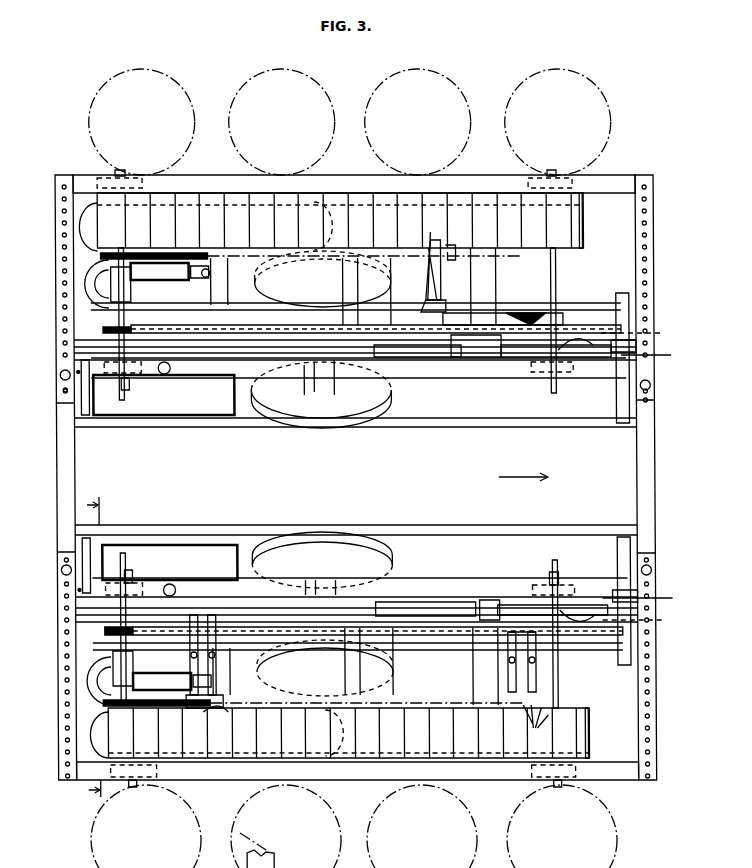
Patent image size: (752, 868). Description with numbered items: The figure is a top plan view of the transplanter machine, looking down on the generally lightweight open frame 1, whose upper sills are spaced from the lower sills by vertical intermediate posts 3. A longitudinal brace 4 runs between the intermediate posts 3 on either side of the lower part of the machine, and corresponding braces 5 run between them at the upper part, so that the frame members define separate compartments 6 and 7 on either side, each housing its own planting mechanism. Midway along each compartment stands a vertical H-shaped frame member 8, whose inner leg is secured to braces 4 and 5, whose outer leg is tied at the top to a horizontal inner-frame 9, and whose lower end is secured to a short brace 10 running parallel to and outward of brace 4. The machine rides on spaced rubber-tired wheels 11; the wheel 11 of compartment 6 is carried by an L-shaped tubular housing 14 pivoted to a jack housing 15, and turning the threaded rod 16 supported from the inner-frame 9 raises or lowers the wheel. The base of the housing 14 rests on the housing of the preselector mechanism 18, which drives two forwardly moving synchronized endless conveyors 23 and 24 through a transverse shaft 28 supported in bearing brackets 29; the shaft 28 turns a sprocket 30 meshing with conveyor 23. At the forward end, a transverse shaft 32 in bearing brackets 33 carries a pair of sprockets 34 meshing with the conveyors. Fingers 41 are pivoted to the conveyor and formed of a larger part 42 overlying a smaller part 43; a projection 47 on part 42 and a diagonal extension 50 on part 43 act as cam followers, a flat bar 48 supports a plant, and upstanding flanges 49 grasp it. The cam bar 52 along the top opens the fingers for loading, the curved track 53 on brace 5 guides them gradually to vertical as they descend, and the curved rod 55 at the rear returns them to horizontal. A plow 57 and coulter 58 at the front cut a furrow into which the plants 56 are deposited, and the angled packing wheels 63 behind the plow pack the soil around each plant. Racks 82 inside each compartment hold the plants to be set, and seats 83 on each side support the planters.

The open frame 1 is at (643, 437).
The intermediate posts 3 is at (77, 372).
The longitudinal brace 4 is at (163, 375).
The longitudinal brace 5 is at (468, 365).
The compartment 6 is at (590, 702).
The compartment 7 is at (542, 268).
The H-shaped frame member 8 is at (243, 862).
The inner-frame 9 is at (372, 699).
The short brace 10 is at (264, 534).
The rubber-tired wheels 11 is at (90, 222).
The L-shaped tubular housing 14 is at (160, 280).
The jack housing 15 is at (197, 476).
The rod 16 is at (207, 273).
The preselector mechanism 18 is at (159, 476).
The endless conveyor 23 is at (500, 483).
The endless conveyor 24 is at (513, 240).
The transverse shaft 28 is at (112, 326).
The bearing brackets 29 is at (140, 180).
The sprocket 30 is at (108, 645).
The transverse shaft 32 is at (556, 280).
The bearing brackets 33 is at (565, 178).
The sprockets 34 is at (598, 480).
The fingers 41 is at (445, 504).
The larger finger part 42 is at (325, 467).
The smaller finger part 43 is at (428, 280).
The projection 47 is at (191, 613).
The flat bar 48 is at (484, 456).
The upstanding flange 49 is at (196, 727).
The diagonal extension 50 is at (504, 488).
The cam bar 52 is at (288, 477).
The curved track 53 is at (515, 604).
The curved rod 55 is at (88, 477).
The plants 56 is at (540, 733).
The plow 57 is at (450, 350).
The coulter 58 is at (653, 333).
The packing wheels 63 is at (408, 561).
The racks 82 is at (426, 428).
The seats 83 is at (254, 82).